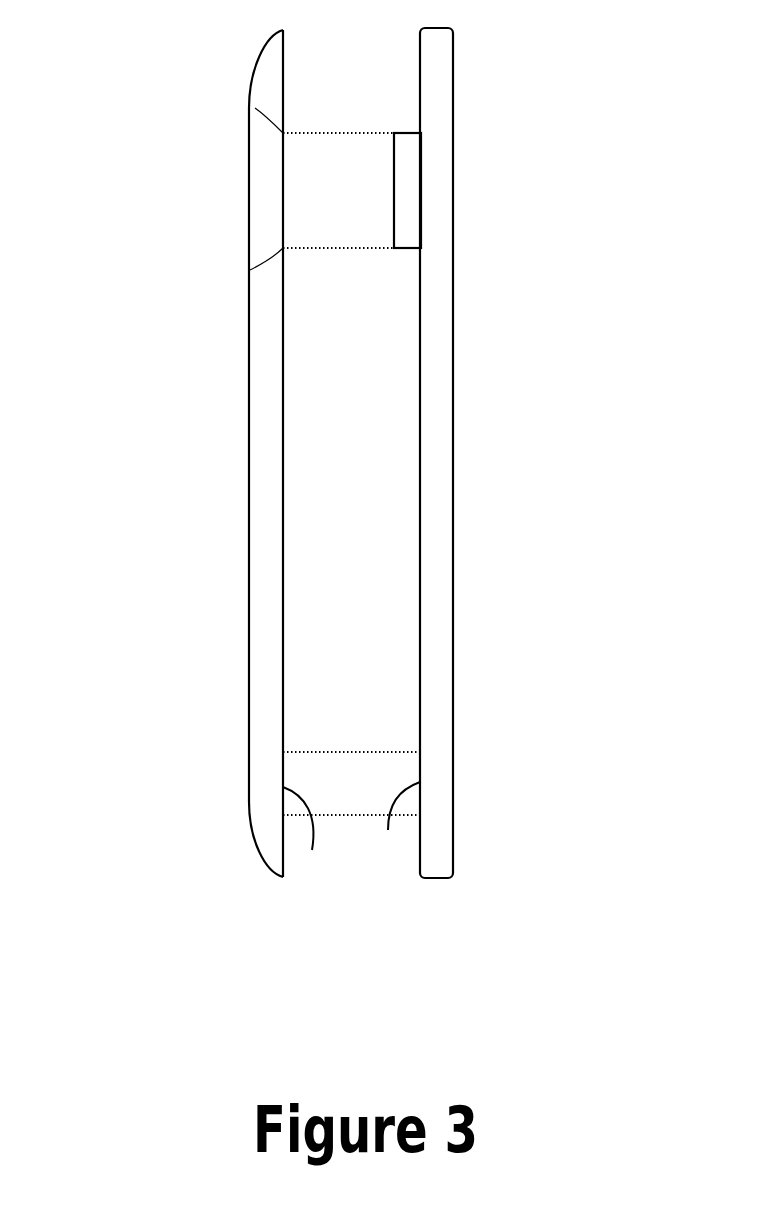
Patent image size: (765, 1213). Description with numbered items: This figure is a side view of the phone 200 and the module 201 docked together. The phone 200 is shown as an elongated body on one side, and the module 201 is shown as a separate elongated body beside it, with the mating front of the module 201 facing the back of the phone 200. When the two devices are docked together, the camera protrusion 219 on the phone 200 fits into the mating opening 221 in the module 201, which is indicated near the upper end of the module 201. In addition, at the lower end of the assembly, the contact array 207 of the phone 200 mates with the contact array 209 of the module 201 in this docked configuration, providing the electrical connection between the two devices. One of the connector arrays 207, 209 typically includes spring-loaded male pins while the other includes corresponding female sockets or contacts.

The phone 200 is at (462, 472).
The module 201 is at (200, 472).
The connector array 207 is at (388, 830).
The connector array 209 is at (312, 850).
The camera protrusion 219 is at (403, 193).
The mating opening 221 is at (213, 130).